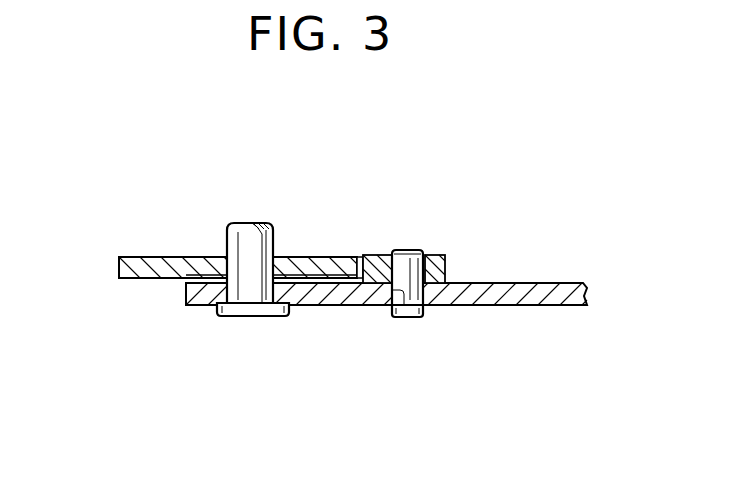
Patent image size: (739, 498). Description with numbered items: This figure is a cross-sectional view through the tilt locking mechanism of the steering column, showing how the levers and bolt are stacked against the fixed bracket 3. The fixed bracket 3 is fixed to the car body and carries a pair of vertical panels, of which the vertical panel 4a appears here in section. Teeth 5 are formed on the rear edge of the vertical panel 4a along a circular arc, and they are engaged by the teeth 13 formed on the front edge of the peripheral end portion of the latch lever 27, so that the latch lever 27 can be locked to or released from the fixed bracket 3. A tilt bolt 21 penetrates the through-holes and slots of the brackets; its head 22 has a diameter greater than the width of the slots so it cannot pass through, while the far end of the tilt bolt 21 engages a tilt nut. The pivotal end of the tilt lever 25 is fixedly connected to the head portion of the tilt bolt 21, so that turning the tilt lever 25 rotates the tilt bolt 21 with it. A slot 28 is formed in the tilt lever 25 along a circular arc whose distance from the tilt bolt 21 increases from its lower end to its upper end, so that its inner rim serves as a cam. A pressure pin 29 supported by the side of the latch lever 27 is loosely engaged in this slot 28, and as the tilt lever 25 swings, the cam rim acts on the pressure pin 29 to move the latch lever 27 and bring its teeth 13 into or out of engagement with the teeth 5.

The fixed bracket 3 is at (123, 278).
The vertical panel 4a is at (160, 286).
The teeth 5 is at (380, 260).
The teeth 13 is at (357, 258).
The tilt bolt 21 is at (242, 240).
The head 22 is at (252, 316).
The tilt lever 25 is at (333, 306).
The latch lever 27 is at (437, 262).
The slot 28 is at (398, 318).
The pressure pin 29 is at (415, 318).